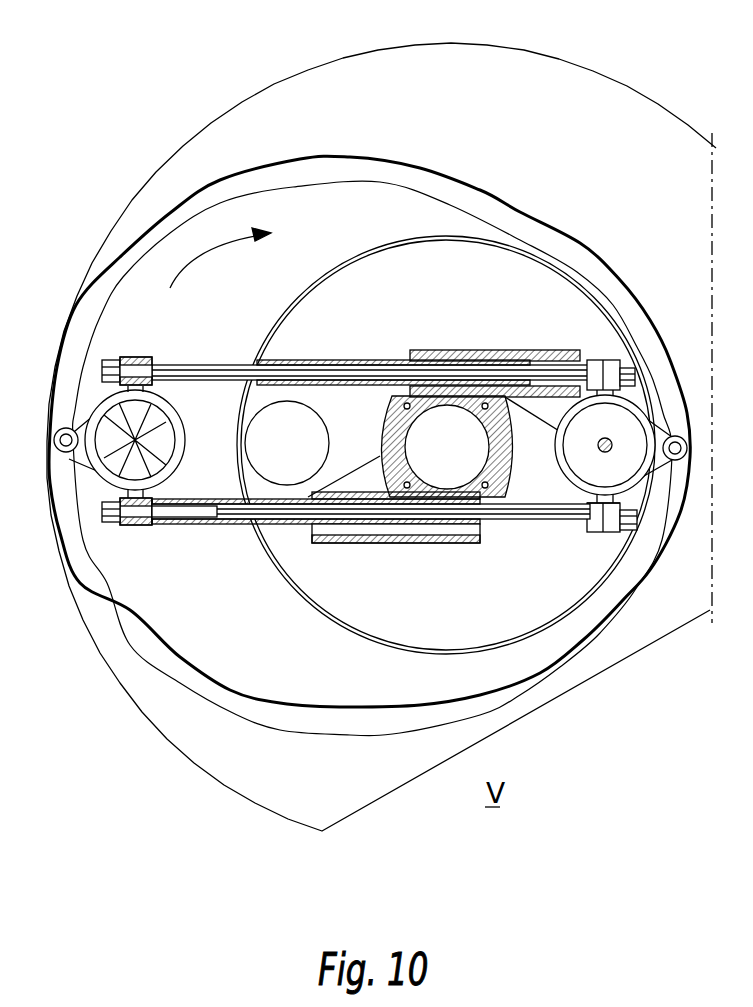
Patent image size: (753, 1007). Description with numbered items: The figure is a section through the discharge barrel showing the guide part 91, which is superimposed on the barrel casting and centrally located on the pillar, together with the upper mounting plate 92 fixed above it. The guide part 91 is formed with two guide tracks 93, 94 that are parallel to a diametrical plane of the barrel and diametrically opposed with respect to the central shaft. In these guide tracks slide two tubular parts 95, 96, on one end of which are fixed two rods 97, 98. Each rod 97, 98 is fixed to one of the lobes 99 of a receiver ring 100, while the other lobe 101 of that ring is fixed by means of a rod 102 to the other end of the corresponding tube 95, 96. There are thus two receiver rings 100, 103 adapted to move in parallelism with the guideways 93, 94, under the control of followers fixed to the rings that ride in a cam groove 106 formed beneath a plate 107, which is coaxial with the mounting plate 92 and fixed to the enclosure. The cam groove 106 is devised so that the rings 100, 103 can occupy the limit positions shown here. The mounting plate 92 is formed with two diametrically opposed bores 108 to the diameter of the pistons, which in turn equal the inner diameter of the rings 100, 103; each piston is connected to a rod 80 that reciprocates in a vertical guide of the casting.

The plate 107 is at (378, 55).
The cam groove 106 is at (224, 190).
The upper mounting plate 92 is at (530, 263).
The bore 108 is at (246, 437).
The guide part 91 is at (498, 467).
The receiver ring 100 is at (628, 404).
The rod 80 is at (603, 450).
The receiver ring 103 is at (160, 417).
The rod 98 is at (182, 364).
The tubular part 96 is at (345, 360).
The guide track 94 is at (492, 350).
The lobe 101 is at (600, 360).
The tubular part 95 is at (263, 524).
The rod 97 is at (523, 519).
The guide track 93 is at (343, 543).
The rod 102 is at (200, 527).
The lobe 99 is at (600, 532).